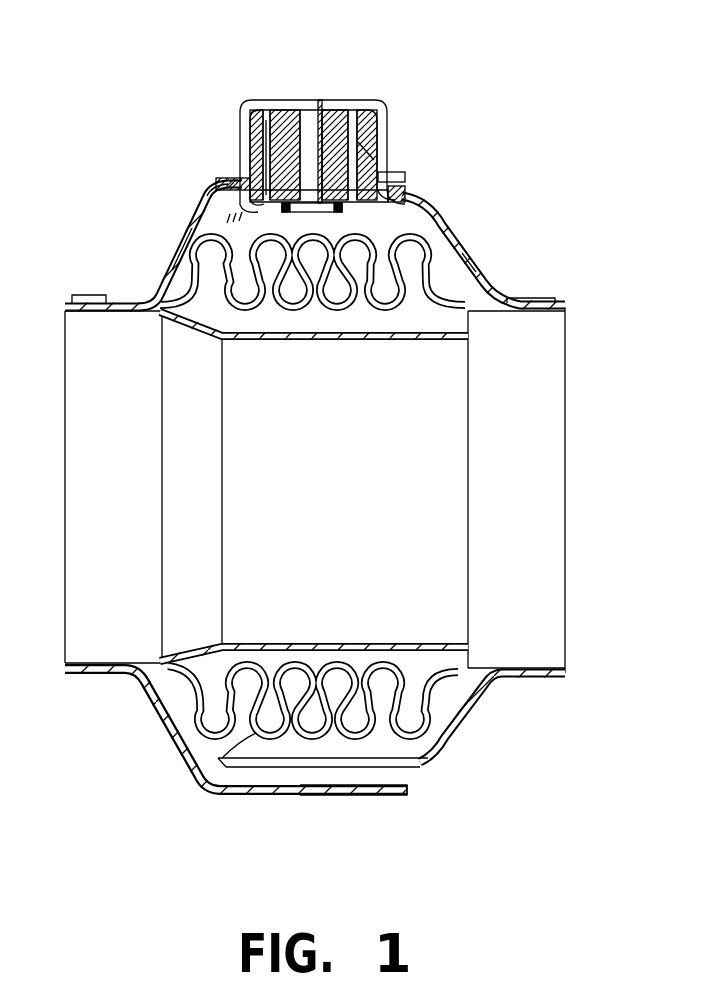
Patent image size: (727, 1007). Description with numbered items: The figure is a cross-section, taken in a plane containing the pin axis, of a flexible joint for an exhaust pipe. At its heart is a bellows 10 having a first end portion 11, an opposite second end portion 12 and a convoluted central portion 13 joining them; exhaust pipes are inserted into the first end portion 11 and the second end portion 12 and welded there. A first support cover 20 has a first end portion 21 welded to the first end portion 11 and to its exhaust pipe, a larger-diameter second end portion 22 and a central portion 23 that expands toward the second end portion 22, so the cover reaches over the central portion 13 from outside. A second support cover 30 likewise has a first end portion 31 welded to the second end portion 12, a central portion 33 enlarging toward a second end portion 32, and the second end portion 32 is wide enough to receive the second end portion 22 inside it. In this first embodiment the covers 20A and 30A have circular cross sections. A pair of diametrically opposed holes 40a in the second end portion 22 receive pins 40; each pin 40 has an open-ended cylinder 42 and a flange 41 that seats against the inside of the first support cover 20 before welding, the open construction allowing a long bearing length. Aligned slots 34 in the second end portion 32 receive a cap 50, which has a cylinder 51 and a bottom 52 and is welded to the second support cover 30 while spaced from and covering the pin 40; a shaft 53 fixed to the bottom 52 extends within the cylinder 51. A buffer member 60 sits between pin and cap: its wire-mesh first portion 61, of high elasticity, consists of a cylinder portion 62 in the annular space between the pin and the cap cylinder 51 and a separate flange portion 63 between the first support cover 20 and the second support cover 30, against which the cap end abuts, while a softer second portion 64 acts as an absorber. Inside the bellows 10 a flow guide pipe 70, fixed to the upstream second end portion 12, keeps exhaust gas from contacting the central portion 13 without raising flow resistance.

The bellows 10 is at (335, 322).
The first end portion 11 is at (567, 310).
The second end portion 12 is at (70, 306).
The central portion 13 is at (288, 312).
The first support cover 20 is at (477, 200).
The first cover 20A is at (486, 703).
The first end portion 21 is at (528, 298).
The second end portion 22 is at (408, 196).
The central portion 23 is at (466, 257).
The second support cover 30 is at (147, 261).
The second cover 30A is at (169, 730).
The first end portion 31 is at (102, 290).
The second end portion 32 is at (244, 188).
The central portion 33 is at (178, 218).
The slot 34 is at (268, 797).
The pin 40 is at (368, 110).
The hole 40a is at (346, 762).
The flange 41 is at (229, 215).
The cylinder 42 is at (314, 102).
The cap 50 is at (236, 98).
The cylinder 51 is at (366, 128).
The bottom 52 is at (312, 100).
The shaft 53 is at (338, 110).
The buffer member 60 is at (286, 106).
The first portion 61 is at (268, 84).
The cylinder portion 62 is at (258, 106).
The flange portion 63 is at (214, 192).
The second portion 64 is at (352, 153).
The flow guide pipe 70 is at (419, 347).